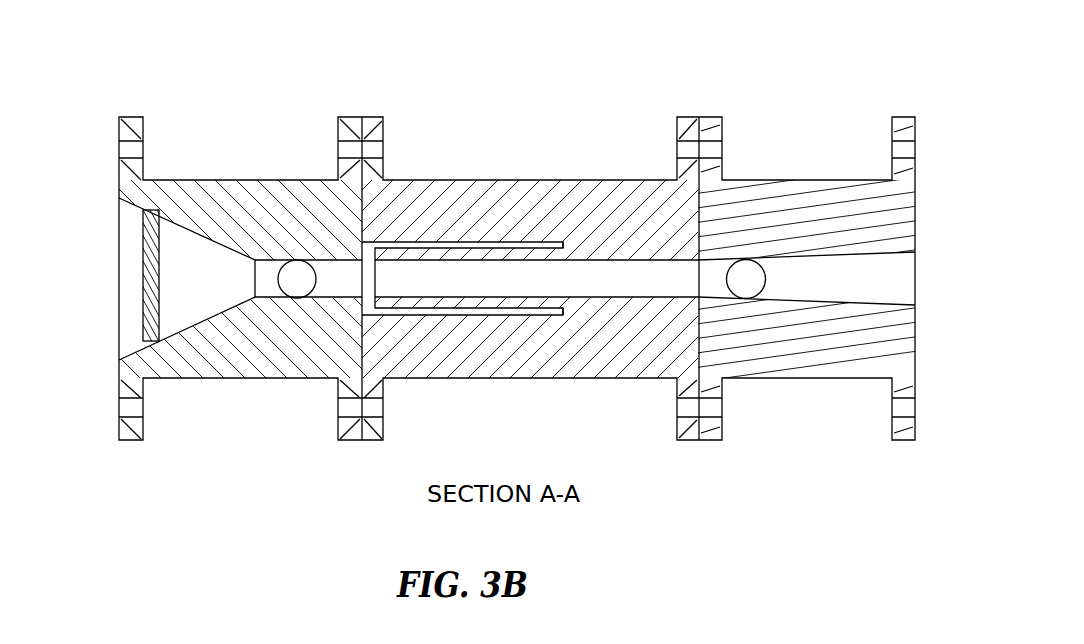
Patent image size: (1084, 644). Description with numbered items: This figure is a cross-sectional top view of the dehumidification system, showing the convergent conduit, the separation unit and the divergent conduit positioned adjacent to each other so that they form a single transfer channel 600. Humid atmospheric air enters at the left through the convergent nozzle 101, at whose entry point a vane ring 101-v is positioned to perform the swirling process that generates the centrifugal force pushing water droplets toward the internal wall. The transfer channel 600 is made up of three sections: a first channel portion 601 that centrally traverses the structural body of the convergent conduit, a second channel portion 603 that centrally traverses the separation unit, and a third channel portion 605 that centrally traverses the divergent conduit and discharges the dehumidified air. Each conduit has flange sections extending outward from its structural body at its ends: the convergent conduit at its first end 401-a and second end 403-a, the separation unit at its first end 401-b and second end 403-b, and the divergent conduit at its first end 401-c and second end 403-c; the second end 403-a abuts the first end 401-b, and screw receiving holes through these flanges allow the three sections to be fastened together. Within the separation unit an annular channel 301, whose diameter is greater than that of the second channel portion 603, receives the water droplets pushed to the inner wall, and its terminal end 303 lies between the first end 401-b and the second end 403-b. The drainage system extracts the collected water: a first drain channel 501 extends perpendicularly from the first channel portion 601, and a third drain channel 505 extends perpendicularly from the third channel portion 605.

The convergent nozzle 101 is at (484, 278).
The first end of the convergent conduit 401-a is at (119, 243).
The vane ring 101-v is at (143, 330).
The transfer channel 600 is at (189, 279).
The first drain channel 501 is at (268, 213).
The first channel portion 601 is at (308, 345).
The second end of the convergent conduit 403-a is at (347, 167).
The first end of the separation unit 401-b is at (363, 132).
The annular channel 301 is at (462, 230).
The terminal end of the annular channel 303 is at (564, 246).
The second end of the separation unit 403-b is at (676, 167).
The first end of the divergent conduit 401-c is at (722, 130).
The second end of the divergent conduit 403-c is at (917, 163).
The third drain channel 505 is at (773, 217).
The second channel portion 603 is at (536, 353).
The third channel portion 605 is at (817, 365).